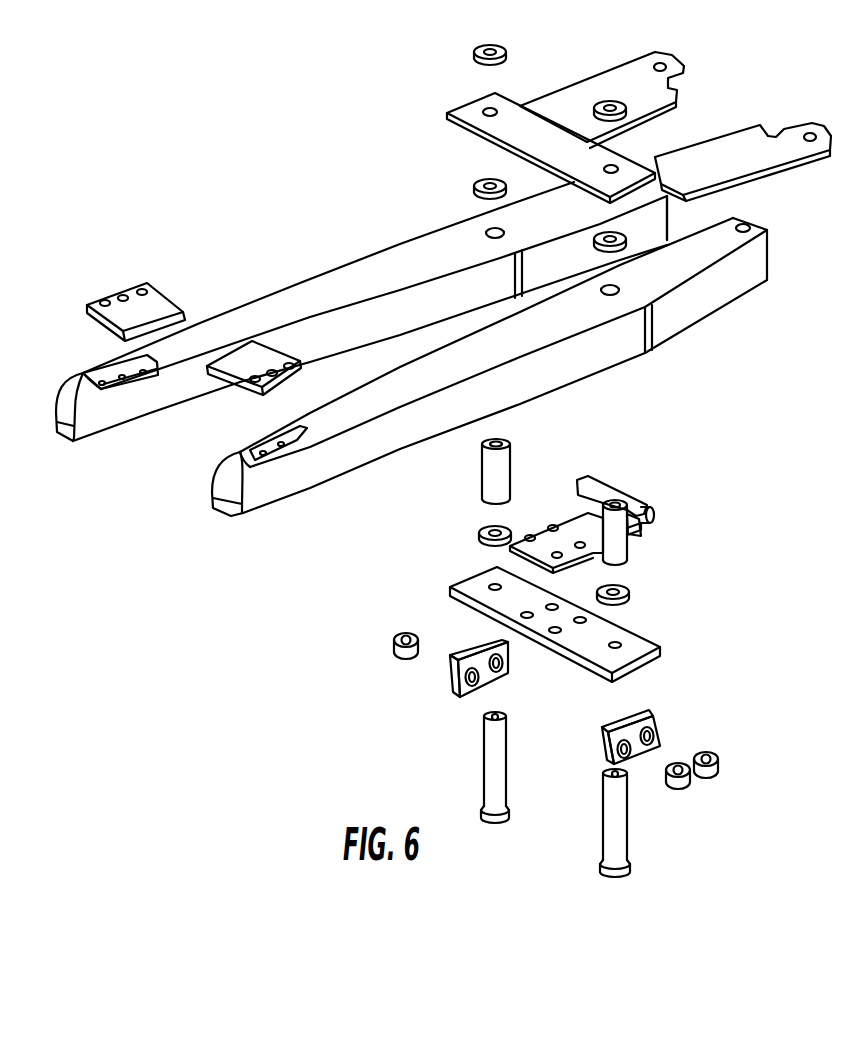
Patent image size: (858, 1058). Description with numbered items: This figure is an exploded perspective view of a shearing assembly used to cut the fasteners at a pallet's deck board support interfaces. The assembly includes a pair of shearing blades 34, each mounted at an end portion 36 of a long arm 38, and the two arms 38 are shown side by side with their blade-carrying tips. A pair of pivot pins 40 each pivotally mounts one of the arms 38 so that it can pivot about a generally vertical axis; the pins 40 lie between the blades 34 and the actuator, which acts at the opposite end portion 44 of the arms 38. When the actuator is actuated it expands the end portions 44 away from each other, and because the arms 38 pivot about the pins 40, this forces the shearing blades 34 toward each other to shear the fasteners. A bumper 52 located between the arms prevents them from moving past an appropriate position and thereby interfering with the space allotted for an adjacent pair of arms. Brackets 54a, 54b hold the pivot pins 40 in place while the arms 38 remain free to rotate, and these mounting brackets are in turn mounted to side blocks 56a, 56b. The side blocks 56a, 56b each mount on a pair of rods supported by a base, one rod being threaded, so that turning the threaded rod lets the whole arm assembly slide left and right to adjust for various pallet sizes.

The shearing blade 34 is at (152, 284).
The end portion 36 is at (77, 441).
The arm 38 is at (300, 285).
The pivot pin 40 is at (482, 756).
The opposite end portion 44 is at (532, 203).
The bumper 52 is at (608, 483).
The bracket 54a is at (630, 124).
The bracket 54b is at (647, 634).
The side block 56a is at (452, 652).
The side block 56b is at (660, 717).